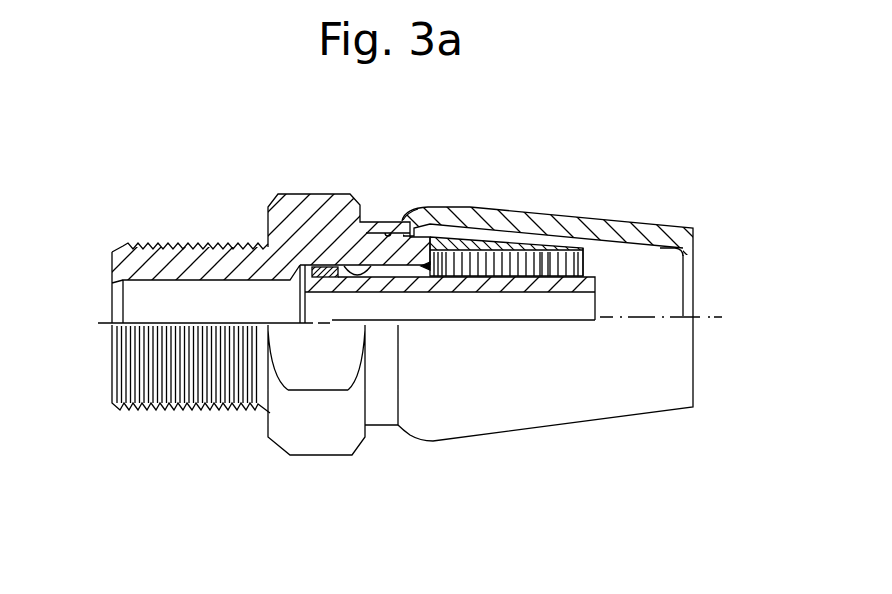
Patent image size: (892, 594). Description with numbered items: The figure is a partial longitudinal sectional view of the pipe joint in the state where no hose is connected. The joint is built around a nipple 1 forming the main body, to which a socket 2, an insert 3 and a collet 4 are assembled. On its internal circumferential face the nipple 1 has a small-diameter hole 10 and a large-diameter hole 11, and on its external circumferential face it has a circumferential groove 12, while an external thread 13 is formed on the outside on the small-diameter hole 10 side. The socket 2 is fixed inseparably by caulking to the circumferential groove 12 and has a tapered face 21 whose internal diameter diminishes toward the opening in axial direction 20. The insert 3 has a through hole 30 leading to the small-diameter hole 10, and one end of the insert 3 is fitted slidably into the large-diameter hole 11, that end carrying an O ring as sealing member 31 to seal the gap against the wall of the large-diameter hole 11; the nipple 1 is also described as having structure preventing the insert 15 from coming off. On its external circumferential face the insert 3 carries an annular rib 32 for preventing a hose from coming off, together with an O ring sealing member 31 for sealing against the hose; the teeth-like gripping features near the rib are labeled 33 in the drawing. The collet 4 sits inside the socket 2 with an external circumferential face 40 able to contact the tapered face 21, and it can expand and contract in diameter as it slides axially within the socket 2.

The nipple 1 is at (284, 193).
The socket 2 is at (670, 223).
The insert 3 is at (597, 283).
The collet 4 is at (553, 250).
The small-diameter hole 10 is at (122, 290).
The large-diameter hole 11 is at (343, 265).
The circumferential groove 12 is at (389, 233).
The external thread 13 is at (157, 247).
The insert 15 is at (441, 235).
The opening in axial direction 20 is at (694, 281).
The tapered face 21 is at (694, 252).
The through hole 30 is at (297, 291).
The sealing member 31 is at (270, 297).
The annular rib 32 is at (445, 250).
The teeth 33 is at (508, 252).
The external circumferential face 40 is at (590, 247).